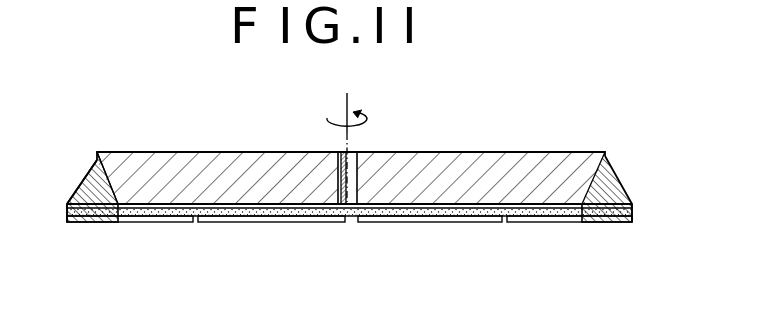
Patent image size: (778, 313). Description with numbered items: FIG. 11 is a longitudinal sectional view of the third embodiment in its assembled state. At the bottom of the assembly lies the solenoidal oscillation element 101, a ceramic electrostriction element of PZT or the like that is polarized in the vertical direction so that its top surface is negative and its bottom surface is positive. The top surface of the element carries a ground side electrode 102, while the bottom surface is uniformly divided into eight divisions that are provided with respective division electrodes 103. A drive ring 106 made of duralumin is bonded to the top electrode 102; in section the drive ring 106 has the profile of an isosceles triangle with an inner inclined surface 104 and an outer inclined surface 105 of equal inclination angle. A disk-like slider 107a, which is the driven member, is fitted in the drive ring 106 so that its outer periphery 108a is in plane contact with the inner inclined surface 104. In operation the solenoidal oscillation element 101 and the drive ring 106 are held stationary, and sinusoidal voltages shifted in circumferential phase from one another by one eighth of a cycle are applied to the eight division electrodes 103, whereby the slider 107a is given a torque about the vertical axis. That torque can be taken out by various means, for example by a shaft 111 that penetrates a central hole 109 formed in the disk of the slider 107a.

The solenoidal oscillation element 101 is at (67, 212).
The ground side electrode 102 is at (451, 213).
The division electrodes 103 is at (105, 223).
The inner inclined surface 104 is at (93, 161).
The outer inclined surface 105 is at (81, 176).
The drive ring 106 is at (609, 180).
The disk-like slider 107a is at (193, 177).
The outer periphery 108a is at (114, 182).
The central hole 109 is at (352, 173).
The shaft 111 is at (347, 102).